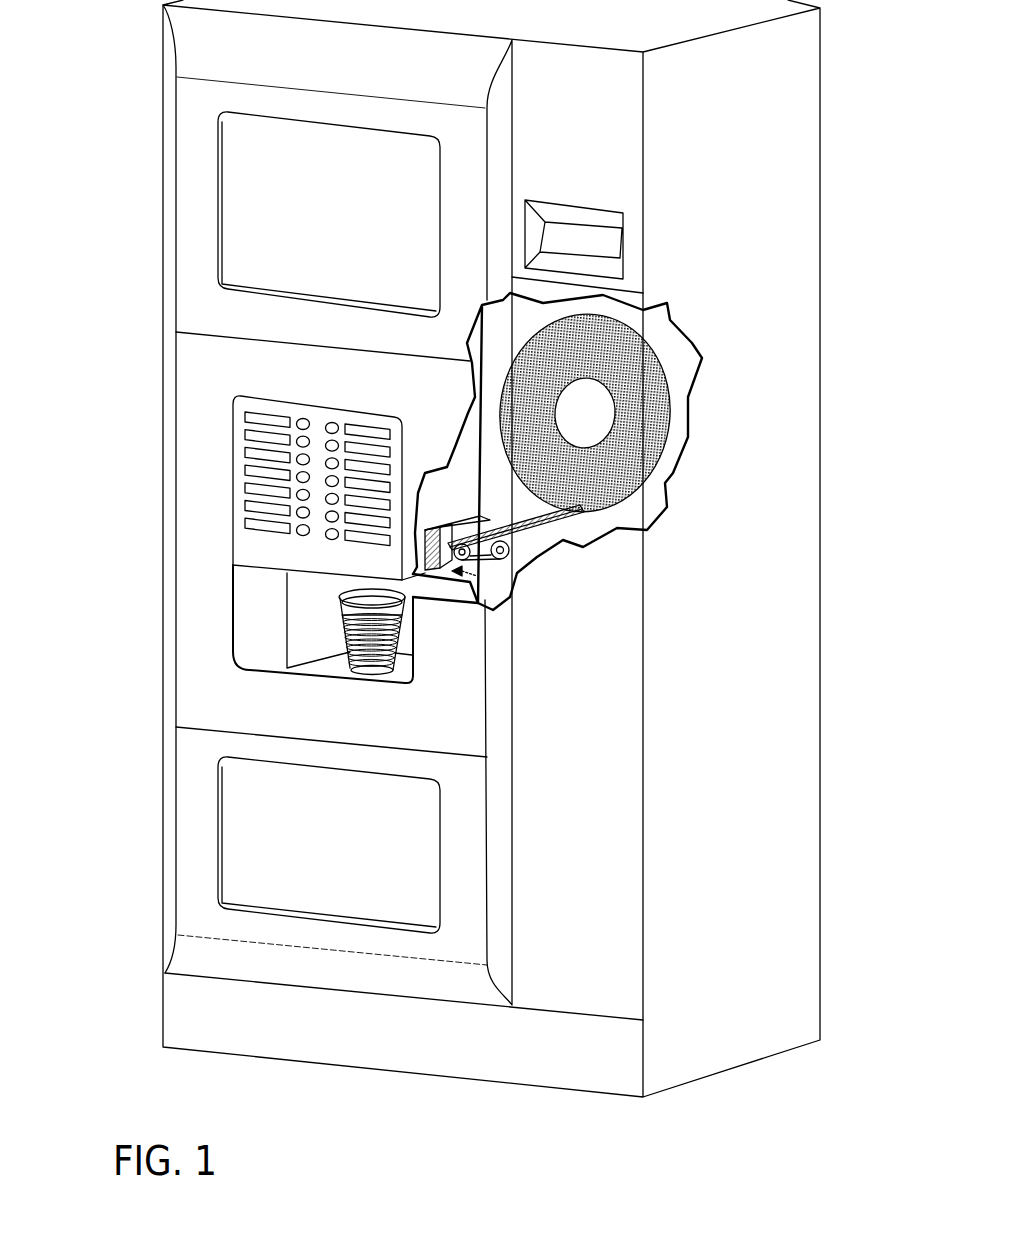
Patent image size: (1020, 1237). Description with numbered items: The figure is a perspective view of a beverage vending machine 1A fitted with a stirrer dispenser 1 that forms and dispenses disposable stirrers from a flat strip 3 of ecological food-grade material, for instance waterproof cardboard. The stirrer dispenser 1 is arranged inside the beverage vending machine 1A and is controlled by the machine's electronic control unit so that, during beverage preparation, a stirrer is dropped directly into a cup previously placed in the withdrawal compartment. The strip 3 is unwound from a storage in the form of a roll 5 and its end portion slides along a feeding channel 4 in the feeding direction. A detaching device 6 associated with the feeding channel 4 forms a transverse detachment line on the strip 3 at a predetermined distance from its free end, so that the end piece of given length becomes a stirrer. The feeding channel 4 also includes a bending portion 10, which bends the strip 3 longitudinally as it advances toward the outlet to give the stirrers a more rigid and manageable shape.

The beverage vending machine 1A is at (104, 157).
The stirrer dispenser 1 is at (526, 570).
The flat strip 3 is at (533, 516).
The feeding channel 4 is at (533, 538).
The roll 5 is at (663, 384).
The detaching device 6 is at (478, 583).
The bending portion 10 is at (466, 524).